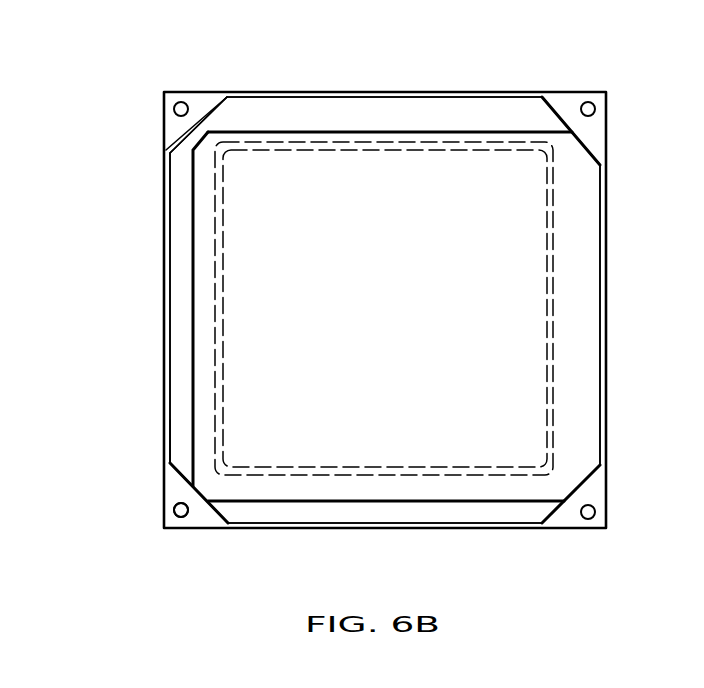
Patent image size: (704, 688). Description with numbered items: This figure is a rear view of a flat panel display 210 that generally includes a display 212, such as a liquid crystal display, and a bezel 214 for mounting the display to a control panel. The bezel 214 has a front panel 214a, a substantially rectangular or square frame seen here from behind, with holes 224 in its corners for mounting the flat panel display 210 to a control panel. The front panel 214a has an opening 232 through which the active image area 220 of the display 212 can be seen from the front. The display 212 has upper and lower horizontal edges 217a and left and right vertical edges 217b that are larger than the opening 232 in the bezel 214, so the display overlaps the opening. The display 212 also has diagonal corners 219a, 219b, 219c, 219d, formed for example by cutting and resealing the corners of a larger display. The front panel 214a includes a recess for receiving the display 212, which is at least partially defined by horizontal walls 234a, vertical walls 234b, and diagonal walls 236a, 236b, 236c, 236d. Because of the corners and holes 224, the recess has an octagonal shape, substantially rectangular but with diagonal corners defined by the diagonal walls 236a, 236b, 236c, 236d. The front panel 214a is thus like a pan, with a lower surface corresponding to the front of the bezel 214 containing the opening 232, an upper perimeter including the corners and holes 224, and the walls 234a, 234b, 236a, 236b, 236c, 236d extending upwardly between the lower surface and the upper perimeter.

The flat panel display 210 is at (492, 76).
The display 212 is at (288, 506).
The bezel 214 is at (161, 328).
The front panel 214a is at (178, 433).
The horizontal edges 217a is at (342, 130).
The vertical edges 217b is at (192, 245).
The diagonal corner 219a is at (196, 147).
The diagonal corner 219b is at (590, 148).
The diagonal corner 219c is at (583, 488).
The diagonal corner 219d is at (200, 498).
The active image area 220 is at (238, 356).
The holes 224 is at (173, 510).
The opening 232 is at (440, 465).
The horizontal walls 234a is at (400, 99).
The vertical walls 234b is at (173, 350).
The diagonal wall 236a is at (225, 107).
The diagonal wall 236b is at (172, 474).
The diagonal wall 236c is at (592, 458).
The diagonal wall 236d is at (556, 103).